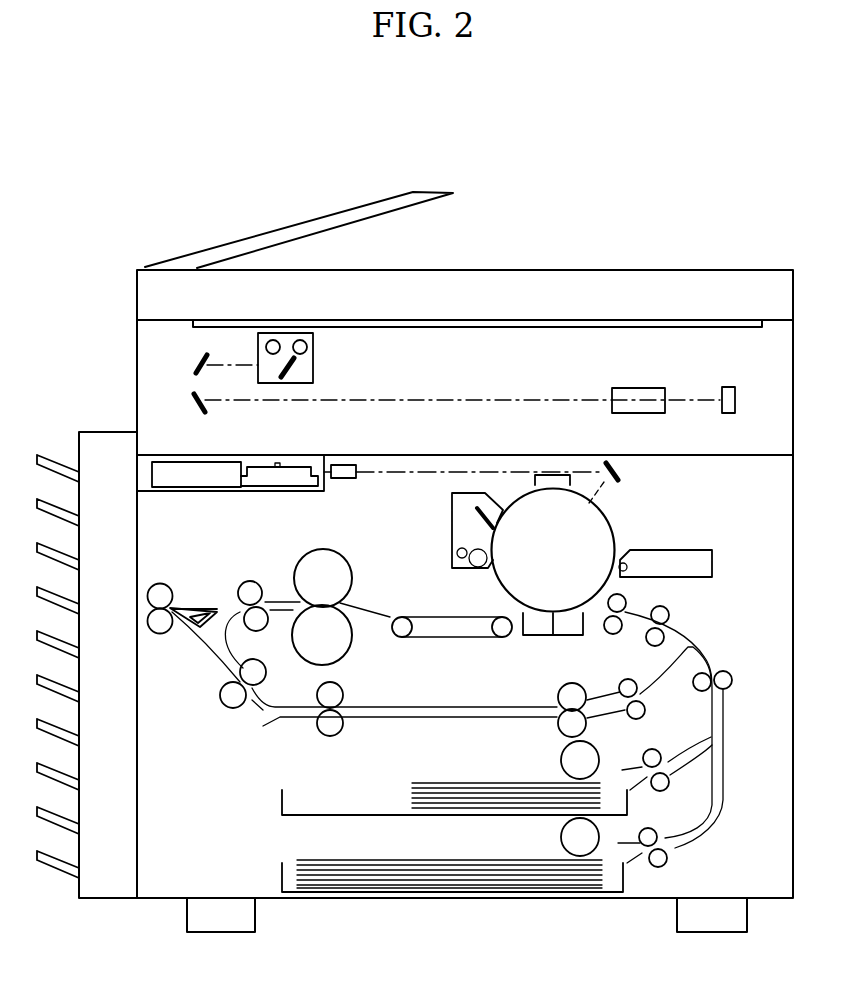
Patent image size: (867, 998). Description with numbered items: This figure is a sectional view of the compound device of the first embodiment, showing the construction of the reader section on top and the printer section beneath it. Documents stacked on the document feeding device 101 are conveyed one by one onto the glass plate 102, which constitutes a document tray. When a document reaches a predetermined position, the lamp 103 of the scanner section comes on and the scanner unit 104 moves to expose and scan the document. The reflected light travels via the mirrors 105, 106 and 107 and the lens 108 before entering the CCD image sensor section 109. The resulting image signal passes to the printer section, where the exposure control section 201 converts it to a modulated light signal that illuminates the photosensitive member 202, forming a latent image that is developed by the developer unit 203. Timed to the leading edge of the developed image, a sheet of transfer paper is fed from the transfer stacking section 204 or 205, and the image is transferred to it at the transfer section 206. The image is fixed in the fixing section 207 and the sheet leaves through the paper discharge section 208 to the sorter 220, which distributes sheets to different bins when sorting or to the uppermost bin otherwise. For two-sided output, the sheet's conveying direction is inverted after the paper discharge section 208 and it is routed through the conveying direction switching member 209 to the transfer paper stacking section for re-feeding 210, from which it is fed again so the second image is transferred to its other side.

The document feeding device 101 is at (268, 231).
The glass plate 102 is at (720, 320).
The lamp 103 is at (299, 341).
The scanner unit 104 is at (314, 353).
The mirror 105 is at (296, 368).
The mirror 106 is at (195, 363).
The mirror 107 is at (192, 400).
The lens 108 is at (633, 387).
The CCD image sensor section 109 is at (727, 387).
The exposure control section 201 is at (258, 463).
The photosensitive member 202 is at (600, 518).
The developer unit 203 is at (690, 550).
The transfer stacking section 204 is at (627, 800).
The transfer stacking section 205 is at (610, 877).
The transfer section 206 is at (571, 630).
The fixing section 207 is at (348, 630).
The paper discharge section 208 is at (147, 622).
The conveying direction switching member 209 is at (193, 621).
The transfer paper stacking section for re-feeding 210 is at (413, 713).
The sorter 220 is at (109, 887).